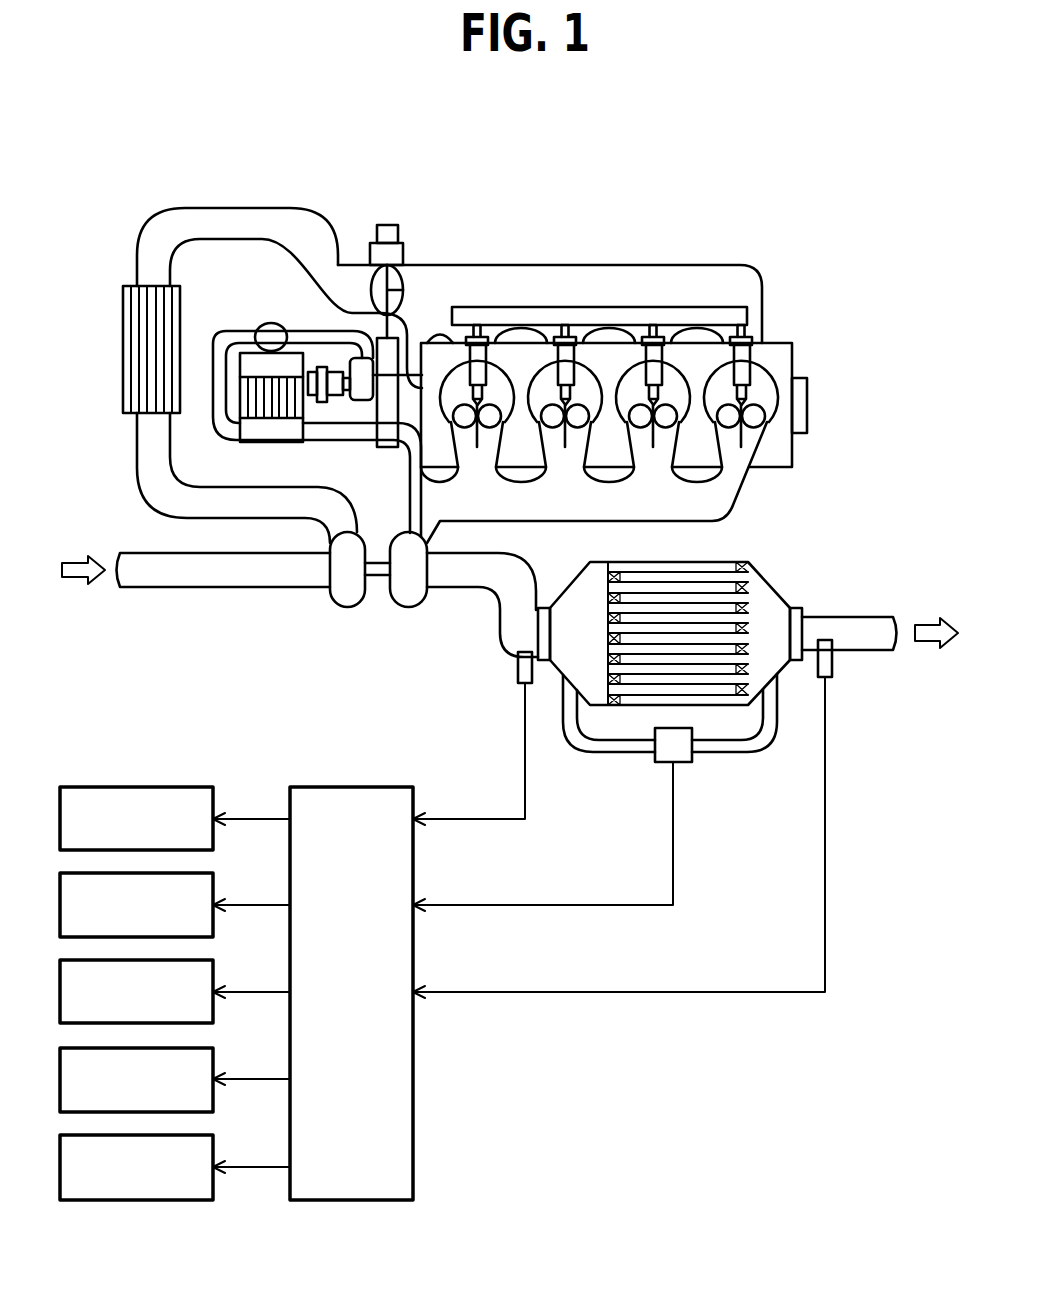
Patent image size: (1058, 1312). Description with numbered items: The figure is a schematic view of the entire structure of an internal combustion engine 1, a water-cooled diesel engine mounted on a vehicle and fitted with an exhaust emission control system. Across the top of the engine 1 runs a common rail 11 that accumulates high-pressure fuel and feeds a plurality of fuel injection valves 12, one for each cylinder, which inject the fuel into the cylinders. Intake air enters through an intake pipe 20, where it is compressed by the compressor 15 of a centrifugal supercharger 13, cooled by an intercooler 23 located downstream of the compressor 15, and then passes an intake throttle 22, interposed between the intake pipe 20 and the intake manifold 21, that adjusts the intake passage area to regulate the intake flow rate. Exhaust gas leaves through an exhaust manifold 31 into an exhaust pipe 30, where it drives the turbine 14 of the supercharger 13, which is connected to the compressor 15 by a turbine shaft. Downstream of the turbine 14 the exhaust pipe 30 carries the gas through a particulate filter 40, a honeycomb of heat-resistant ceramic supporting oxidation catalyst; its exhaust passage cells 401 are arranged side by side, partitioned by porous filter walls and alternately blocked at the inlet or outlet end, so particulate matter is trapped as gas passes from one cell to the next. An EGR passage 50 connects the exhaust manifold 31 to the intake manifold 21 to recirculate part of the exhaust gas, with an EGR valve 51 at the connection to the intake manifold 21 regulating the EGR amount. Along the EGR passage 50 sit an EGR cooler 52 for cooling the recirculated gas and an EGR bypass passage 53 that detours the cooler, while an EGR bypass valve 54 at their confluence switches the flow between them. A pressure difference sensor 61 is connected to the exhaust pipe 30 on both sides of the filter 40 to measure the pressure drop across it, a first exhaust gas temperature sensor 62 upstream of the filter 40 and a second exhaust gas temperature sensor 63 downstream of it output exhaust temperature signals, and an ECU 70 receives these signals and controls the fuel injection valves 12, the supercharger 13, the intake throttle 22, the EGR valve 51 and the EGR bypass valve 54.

The internal combustion engine 1 is at (830, 374).
The common rail 11 is at (717, 310).
The fuel injection valve 12 is at (745, 354).
The centrifugal supercharger 13 is at (243, 734).
The turbine 14 is at (408, 601).
The compressor 15 is at (347, 607).
The intake pipe 20 is at (203, 207).
The intake manifold 21 is at (680, 265).
The intake throttle 22 is at (403, 290).
The intercooler 23 is at (148, 353).
The exhaust pipe 30 is at (477, 590).
The exhaust manifold 31 is at (732, 490).
The particulate filter 40 is at (748, 608).
The exhaust passage cell 401 is at (690, 605).
The EGR passage 50 is at (304, 328).
The EGR valve 51 is at (333, 372).
The EGR cooler 52 is at (278, 402).
The EGR bypass passage 53 is at (212, 386).
The EGR bypass valve 54 is at (262, 325).
The pressure difference sensor 61 is at (687, 762).
The first exhaust gas temperature sensor 62 is at (518, 670).
The second exhaust gas temperature sensor 63 is at (835, 668).
The ECU 70 is at (372, 787).